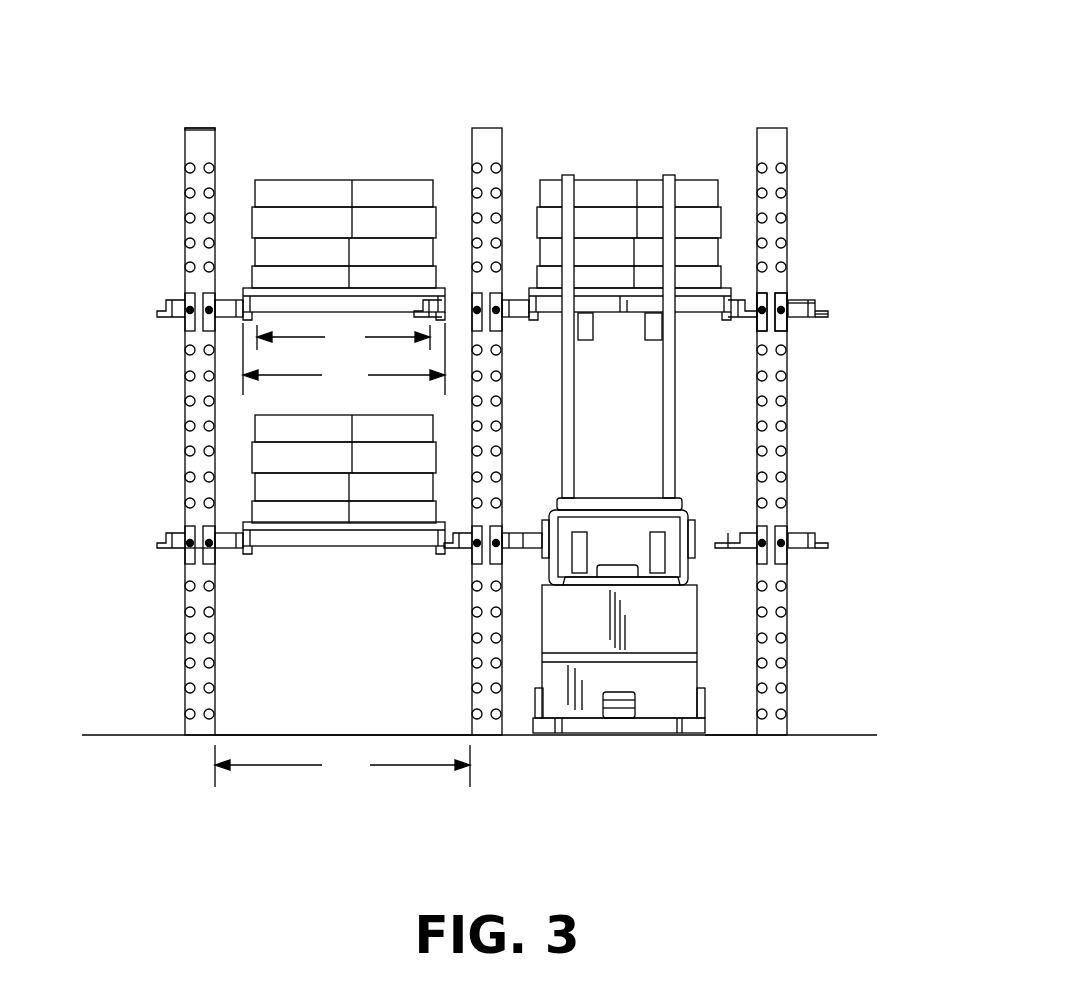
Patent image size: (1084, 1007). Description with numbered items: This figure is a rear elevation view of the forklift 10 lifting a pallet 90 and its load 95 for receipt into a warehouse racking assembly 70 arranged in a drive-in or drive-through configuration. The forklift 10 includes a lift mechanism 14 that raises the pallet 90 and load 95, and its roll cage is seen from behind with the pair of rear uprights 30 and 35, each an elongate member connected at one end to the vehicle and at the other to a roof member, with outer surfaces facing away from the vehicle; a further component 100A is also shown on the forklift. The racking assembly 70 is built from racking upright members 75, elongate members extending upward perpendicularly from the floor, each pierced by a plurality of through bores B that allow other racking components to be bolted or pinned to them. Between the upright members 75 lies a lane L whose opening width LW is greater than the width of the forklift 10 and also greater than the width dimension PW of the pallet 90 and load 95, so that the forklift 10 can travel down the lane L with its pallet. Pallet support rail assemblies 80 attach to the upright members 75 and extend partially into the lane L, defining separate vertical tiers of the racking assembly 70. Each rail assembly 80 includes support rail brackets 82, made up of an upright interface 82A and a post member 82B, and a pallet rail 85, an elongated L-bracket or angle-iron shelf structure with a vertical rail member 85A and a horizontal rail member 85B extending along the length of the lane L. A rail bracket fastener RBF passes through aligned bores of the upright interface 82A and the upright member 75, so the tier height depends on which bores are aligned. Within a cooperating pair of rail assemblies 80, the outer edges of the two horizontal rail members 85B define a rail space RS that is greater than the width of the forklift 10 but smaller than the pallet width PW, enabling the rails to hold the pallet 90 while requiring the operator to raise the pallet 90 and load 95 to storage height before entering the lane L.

The forklift 10 is at (721, 491).
The lift mechanism 14 is at (690, 433).
The rear upright 30 is at (553, 570).
The rear upright 35 is at (693, 513).
The racking assembly 70 is at (205, 126).
The racking upright member 75 is at (205, 143).
The pallet support rail assembly 80 is at (808, 561).
The support rail bracket 82 is at (172, 328).
The upright interface 82A is at (783, 327).
The post member 82B is at (798, 302).
The pallet rail 85 is at (222, 295).
The vertical rail member 85A is at (817, 303).
The horizontal rail member 85B is at (823, 317).
The pallet 90 is at (345, 542).
The load 95 is at (255, 485).
The sensor 100A is at (706, 562).
The through bore B is at (480, 165).
The lane L is at (283, 665).
The rail bracket fastener RBF is at (188, 550).
The rail space RS is at (343, 337).
The width dimension of the pallet PW is at (344, 359).
The lane width LW is at (342, 766).